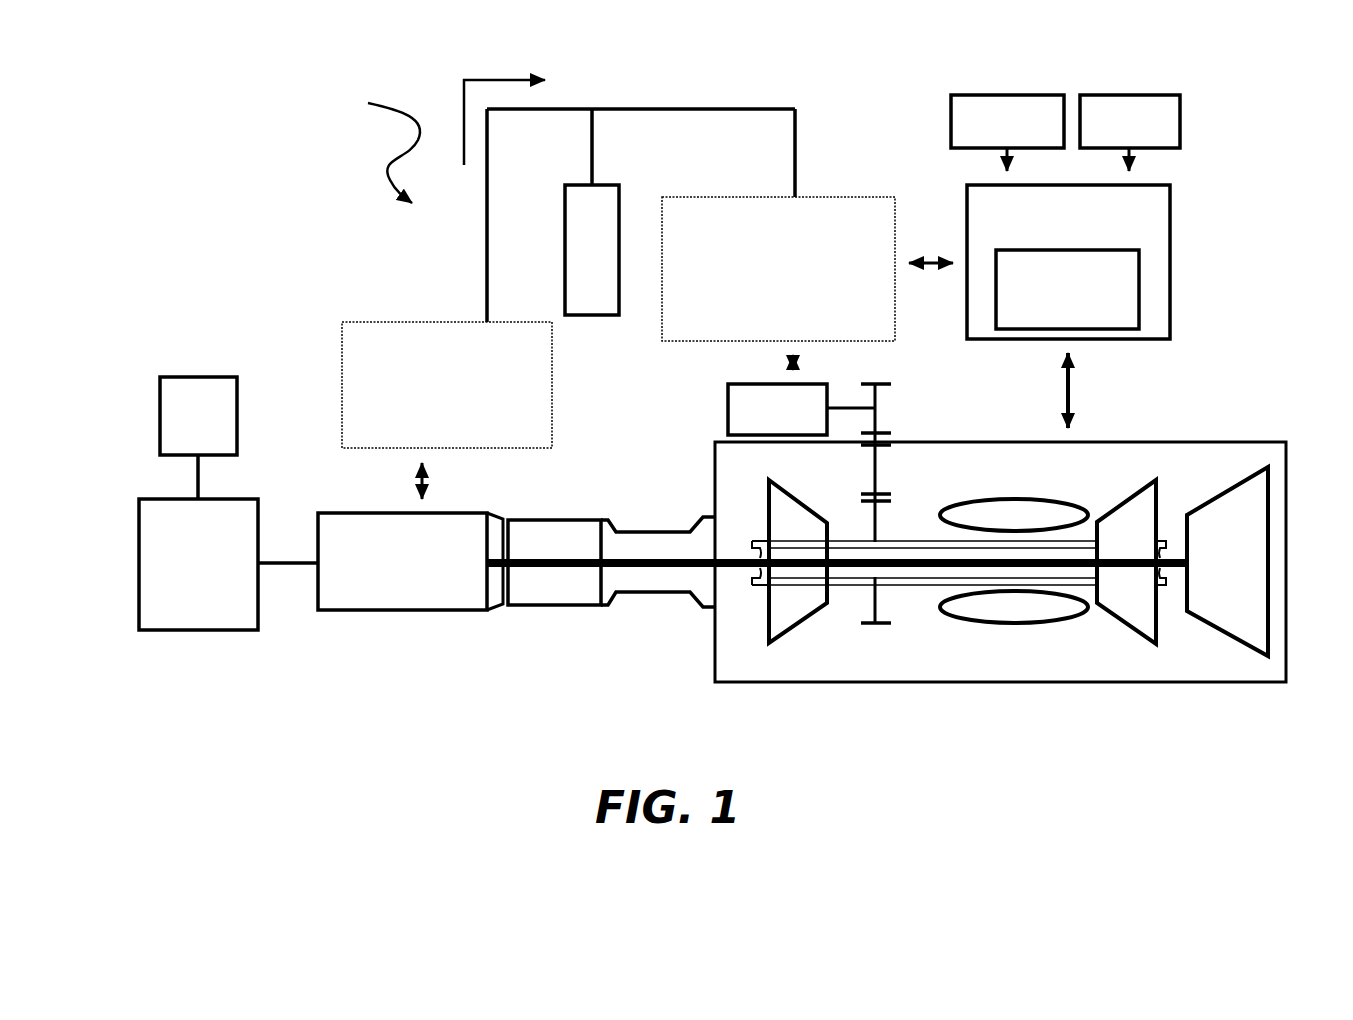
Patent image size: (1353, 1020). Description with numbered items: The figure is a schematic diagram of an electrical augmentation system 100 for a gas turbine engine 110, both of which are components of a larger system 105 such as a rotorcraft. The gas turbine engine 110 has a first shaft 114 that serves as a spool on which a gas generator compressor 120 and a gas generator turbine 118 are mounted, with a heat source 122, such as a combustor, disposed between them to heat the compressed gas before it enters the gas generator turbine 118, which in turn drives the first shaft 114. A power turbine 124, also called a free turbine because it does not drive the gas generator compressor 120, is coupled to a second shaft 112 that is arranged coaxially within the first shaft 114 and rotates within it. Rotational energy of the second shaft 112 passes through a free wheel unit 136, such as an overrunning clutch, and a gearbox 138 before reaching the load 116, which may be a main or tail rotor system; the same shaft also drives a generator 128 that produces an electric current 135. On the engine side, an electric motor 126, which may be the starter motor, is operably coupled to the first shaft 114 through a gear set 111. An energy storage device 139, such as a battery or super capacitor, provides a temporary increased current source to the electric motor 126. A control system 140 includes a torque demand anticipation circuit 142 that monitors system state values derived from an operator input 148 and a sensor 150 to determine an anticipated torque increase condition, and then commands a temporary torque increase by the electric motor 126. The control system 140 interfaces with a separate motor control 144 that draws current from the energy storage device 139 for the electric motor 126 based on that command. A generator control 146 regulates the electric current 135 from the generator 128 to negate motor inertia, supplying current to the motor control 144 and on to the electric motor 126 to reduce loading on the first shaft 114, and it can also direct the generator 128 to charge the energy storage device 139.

The electrical augmentation system 100 is at (373, 144).
The system 105 is at (665, 35).
The gas turbine engine 110 is at (1188, 442).
The gear set 111 is at (875, 627).
The second shaft 112 is at (637, 568).
The first shaft 114 is at (907, 580).
The load 116 is at (227, 375).
The gas generator turbine 118 is at (1134, 630).
The gas generator compressor 120 is at (792, 632).
The heat source 122 is at (1015, 627).
The power turbine 124 is at (1232, 637).
The electric motor 126 is at (727, 410).
The generator 128 is at (382, 612).
The electric current 135 is at (463, 114).
The free wheel unit 136 is at (551, 608).
The gearbox 138 is at (208, 632).
The energy storage device 139 is at (583, 317).
The control system 140 is at (1172, 232).
The torque demand anticipation circuit 142 is at (1143, 322).
The motor control 144 is at (730, 195).
The generator control 146 is at (550, 405).
The operator input 148 is at (972, 93).
The sensor 150 is at (1163, 93).